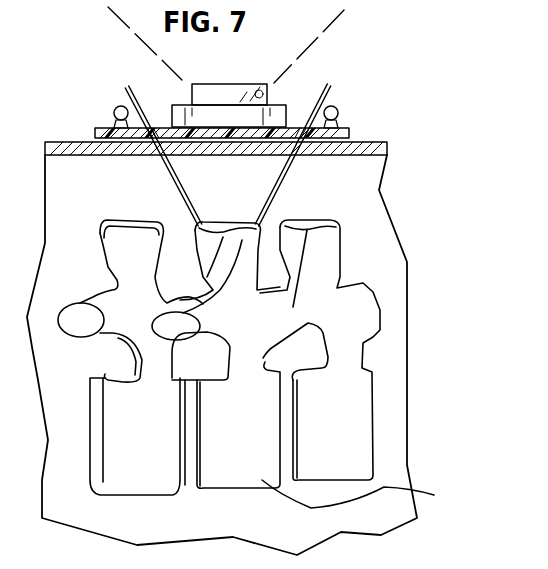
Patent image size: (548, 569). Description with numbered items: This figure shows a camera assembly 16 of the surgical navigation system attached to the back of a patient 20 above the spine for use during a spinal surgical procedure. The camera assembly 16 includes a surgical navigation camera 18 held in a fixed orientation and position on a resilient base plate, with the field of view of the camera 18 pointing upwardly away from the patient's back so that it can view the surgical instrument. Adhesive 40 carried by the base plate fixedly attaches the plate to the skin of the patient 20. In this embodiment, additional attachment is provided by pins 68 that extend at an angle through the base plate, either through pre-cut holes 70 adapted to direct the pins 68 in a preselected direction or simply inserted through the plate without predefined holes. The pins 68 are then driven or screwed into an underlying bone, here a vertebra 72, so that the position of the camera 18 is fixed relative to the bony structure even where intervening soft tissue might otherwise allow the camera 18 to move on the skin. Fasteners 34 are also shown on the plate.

The camera assembly 16 is at (92, 133).
The surgical navigation camera 18 is at (230, 83).
The patient 20 is at (392, 312).
The ball fastener 34 is at (113, 107).
The adhesive 40 is at (350, 139).
The pins 68 is at (125, 86).
The pre-cut holes 70 is at (155, 128).
The vertebra 72 is at (360, 494).